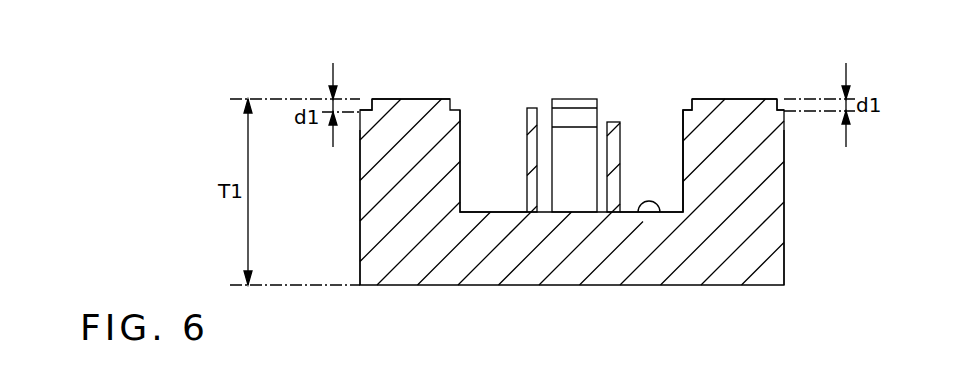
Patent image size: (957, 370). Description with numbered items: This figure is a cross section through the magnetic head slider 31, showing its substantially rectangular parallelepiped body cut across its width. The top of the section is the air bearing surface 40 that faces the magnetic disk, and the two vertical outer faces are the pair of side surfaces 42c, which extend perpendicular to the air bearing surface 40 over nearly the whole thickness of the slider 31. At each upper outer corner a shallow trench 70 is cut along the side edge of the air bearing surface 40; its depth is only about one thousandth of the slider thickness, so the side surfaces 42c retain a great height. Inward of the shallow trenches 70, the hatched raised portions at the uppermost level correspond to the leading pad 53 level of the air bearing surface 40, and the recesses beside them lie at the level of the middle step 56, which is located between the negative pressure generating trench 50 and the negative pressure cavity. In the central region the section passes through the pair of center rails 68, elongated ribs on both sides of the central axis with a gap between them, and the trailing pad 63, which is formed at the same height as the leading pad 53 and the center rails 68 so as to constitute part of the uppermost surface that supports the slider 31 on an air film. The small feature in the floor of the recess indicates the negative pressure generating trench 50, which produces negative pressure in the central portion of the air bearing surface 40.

The slider 31 is at (409, 263).
The air bearing surface 40 is at (698, 99).
The side surfaces 42c is at (360, 224).
The negative pressure generating trench 50 is at (640, 214).
The leading pad 53 is at (414, 96).
The middle step 56 is at (483, 123).
The trailing pad 63 is at (573, 97).
The center rails 68 is at (530, 104).
The shallow trenches 70 is at (364, 106).